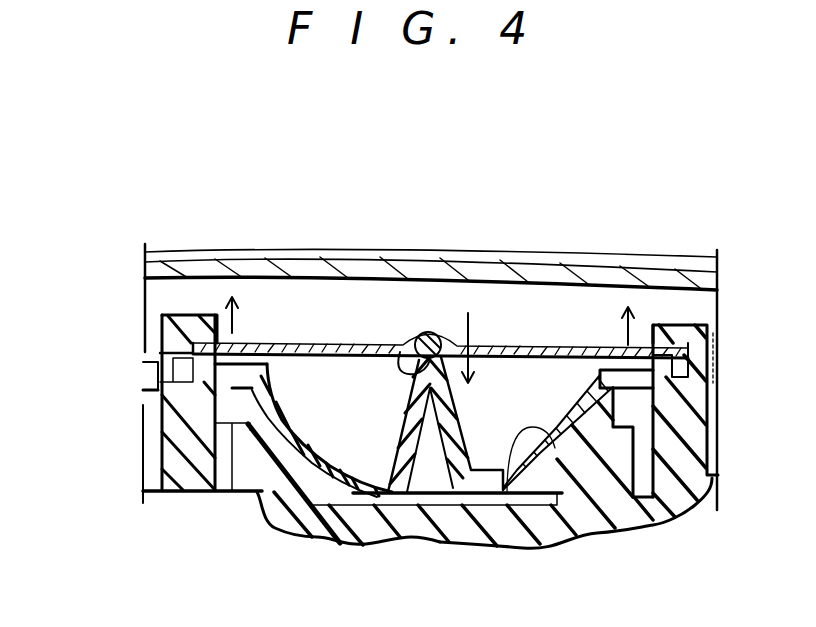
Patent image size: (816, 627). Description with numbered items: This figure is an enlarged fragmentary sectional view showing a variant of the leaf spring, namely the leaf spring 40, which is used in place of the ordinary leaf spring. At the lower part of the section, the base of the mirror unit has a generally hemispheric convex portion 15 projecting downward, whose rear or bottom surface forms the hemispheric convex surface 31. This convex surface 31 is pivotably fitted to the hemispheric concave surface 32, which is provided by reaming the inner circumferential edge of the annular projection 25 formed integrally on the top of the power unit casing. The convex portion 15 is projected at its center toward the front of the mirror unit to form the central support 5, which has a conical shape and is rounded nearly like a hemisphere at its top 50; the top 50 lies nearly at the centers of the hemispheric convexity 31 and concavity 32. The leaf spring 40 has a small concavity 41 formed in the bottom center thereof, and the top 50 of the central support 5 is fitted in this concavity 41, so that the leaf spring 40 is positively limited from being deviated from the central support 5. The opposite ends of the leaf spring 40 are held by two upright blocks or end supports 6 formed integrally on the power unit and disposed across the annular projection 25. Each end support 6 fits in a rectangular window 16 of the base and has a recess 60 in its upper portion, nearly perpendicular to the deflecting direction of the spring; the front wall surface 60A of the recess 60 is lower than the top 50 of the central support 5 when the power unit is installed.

The upright block (end support) 6 is at (200, 338).
The front wall surface of recess 60A is at (218, 312).
The recess 60 is at (160, 425).
The rectangular window 16 is at (143, 367).
The leaf spring 40 is at (513, 347).
The top of central support 50 is at (421, 332).
The concavity 41 is at (408, 410).
The central support 5 is at (405, 402).
The hemispheric concave surface 32 is at (296, 410).
The hemispheric convex portion 15 is at (511, 470).
The hemispheric convex surface 31 is at (283, 447).
The annular projection 25 is at (600, 455).